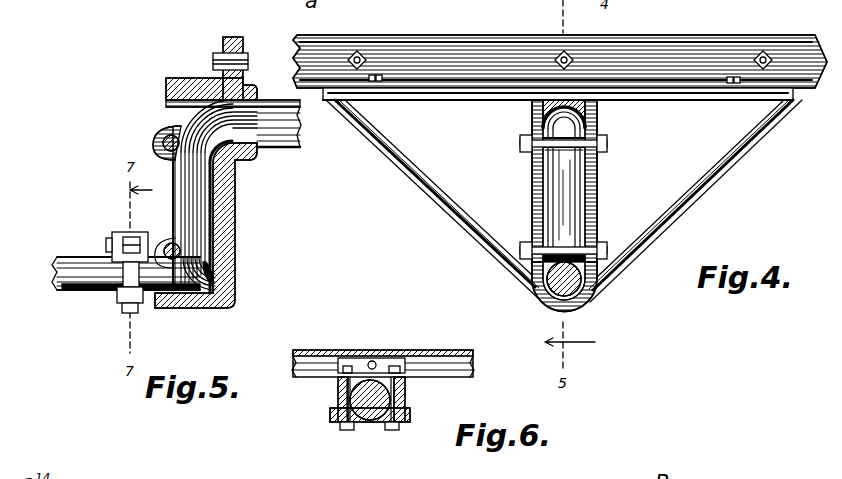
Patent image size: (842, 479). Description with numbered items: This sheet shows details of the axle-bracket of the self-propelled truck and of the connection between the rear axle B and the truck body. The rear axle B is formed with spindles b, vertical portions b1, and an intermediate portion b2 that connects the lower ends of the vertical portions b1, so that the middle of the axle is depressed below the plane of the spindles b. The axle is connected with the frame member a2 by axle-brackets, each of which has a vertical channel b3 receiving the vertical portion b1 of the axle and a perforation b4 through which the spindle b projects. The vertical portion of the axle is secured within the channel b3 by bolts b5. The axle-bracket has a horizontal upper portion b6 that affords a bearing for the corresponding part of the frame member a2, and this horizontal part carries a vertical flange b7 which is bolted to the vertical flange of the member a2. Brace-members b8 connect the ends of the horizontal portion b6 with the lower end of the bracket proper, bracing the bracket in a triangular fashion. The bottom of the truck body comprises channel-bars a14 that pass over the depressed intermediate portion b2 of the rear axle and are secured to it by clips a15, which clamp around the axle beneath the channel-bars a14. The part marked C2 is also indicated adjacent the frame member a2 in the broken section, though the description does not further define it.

In FIG. 4, the frame member a2 is at (445, 50).
In FIG. 5, the frame member a2 is at (190, 78).
In FIG. 5, the channel-bars a14 is at (112, 241).
In FIG. 6, the channel-bars a14 is at (456, 341).
In FIG. 5, the clips a15 is at (120, 262).
In FIG. 6, the clips a15 is at (338, 385).
In FIG. 4, the car part C2 is at (425, 10).
In FIG. 4, the spindles b is at (541, 126).
In FIG. 5, the spindles b is at (290, 145).
In FIG. 4, the vertical portions b1 is at (556, 191).
In FIG. 5, the vertical portions b1 is at (225, 205).
In FIG. 4, the intermediate portion b2 is at (598, 203).
In FIG. 5, the intermediate portion b2 is at (57, 272).
In FIG. 6, the intermediate portion b2 is at (367, 425).
In FIG. 4, the vertical channel b3 is at (580, 107).
In FIG. 5, the vertical channel b3 is at (213, 281).
In FIG. 5, the perforation b4 is at (250, 85).
In FIG. 4, the bolts b5 is at (608, 147).
In FIG. 5, the bolts b5 is at (162, 129).
In FIG. 4, the horizontal upper portion b6 is at (477, 101).
In FIG. 5, the vertical flange b7 is at (243, 37).
In FIG. 4, the brace-members b8 is at (447, 216).
In FIG. 4, the rear axle B is at (580, 284).
In FIG. 6, the rear axle B is at (372, 362).